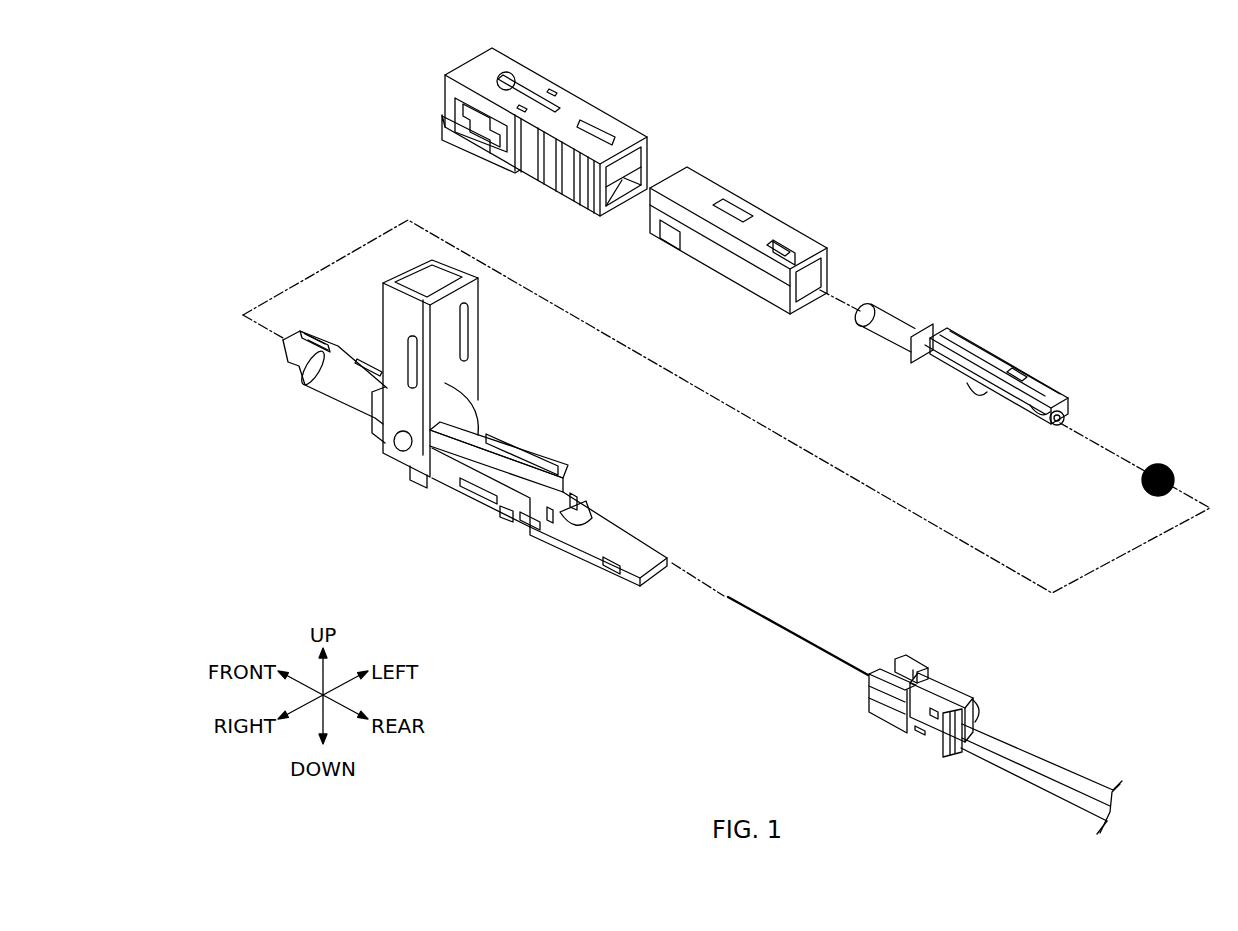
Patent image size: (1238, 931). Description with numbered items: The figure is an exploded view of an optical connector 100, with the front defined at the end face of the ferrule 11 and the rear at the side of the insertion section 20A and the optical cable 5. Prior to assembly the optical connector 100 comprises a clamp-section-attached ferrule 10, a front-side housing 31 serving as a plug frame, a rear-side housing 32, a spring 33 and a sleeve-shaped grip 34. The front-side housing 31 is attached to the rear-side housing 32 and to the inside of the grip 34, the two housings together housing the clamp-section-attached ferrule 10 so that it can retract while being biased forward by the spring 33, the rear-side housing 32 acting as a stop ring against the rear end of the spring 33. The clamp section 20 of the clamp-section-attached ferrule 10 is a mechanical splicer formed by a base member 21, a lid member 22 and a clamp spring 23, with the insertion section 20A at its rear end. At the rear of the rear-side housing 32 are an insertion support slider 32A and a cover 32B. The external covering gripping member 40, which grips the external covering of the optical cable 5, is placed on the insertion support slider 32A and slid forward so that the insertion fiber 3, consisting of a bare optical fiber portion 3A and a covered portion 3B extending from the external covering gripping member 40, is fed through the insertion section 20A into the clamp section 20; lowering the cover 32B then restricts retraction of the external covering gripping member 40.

The optical connector 100 is at (906, 99).
The grip 34 is at (583, 106).
The front-side housing 31 is at (684, 188).
The clamp-section-attached ferrule 10 is at (1090, 259).
The ferrule 11 is at (889, 321).
The clamp section 20 is at (1120, 325).
The base member 21 is at (952, 348).
The lid member 22 is at (995, 378).
The clamp spring 23 is at (1040, 412).
The insertion section 20A is at (1063, 413).
The spring 33 is at (1172, 466).
The rear-side housing 32 is at (348, 394).
The cover 32B is at (472, 369).
The insertion support slider 32A is at (620, 572).
The insertion fiber 3 is at (757, 725).
The bare optical fiber portion 3A is at (760, 617).
The covered portion 3B is at (813, 652).
The external covering gripping member 40 is at (934, 691).
The optical cable 5 is at (1037, 759).